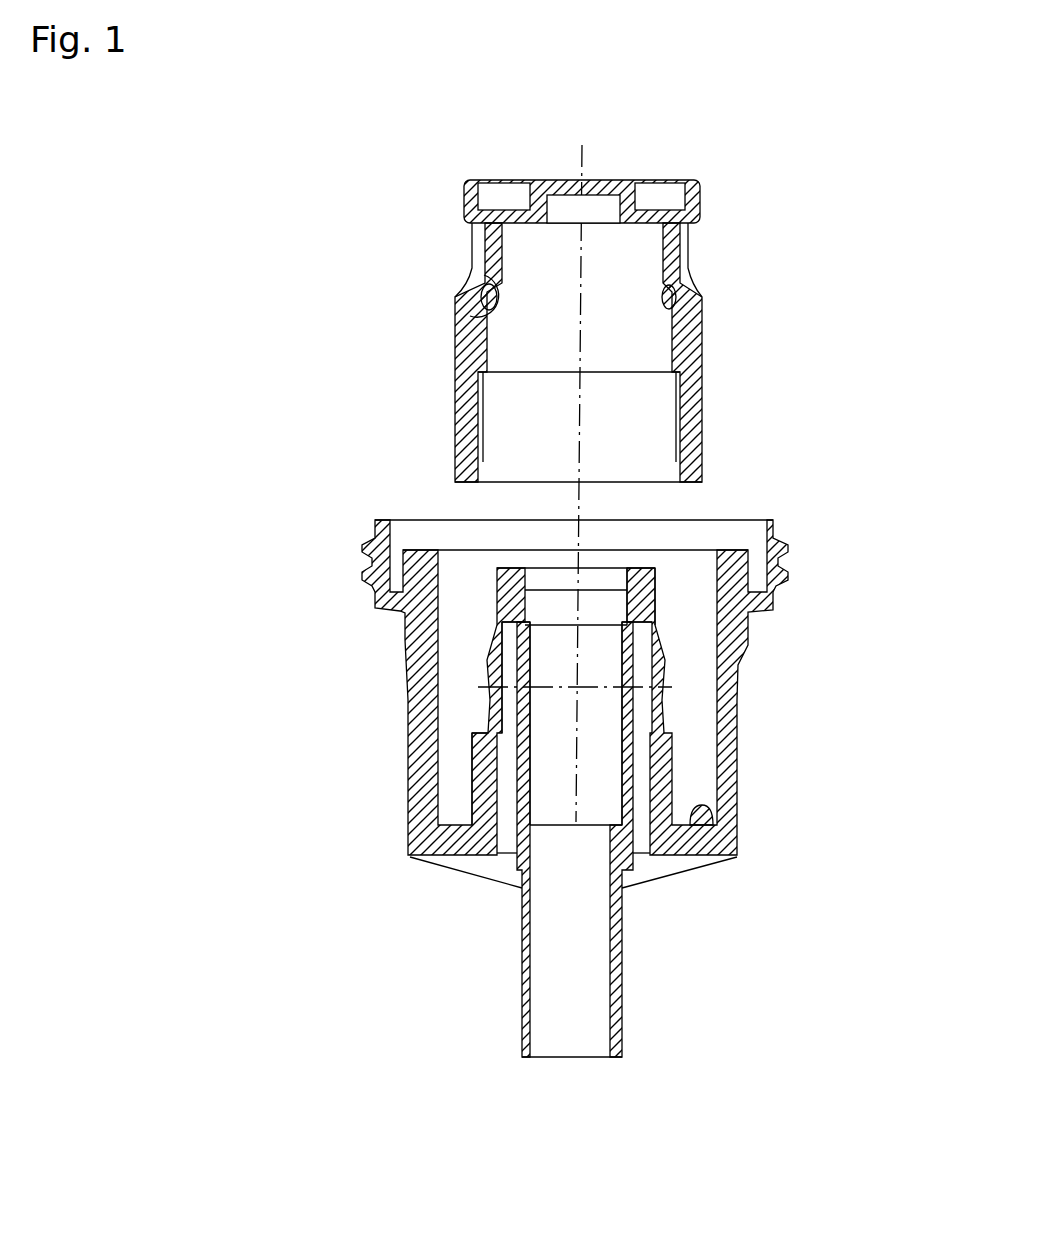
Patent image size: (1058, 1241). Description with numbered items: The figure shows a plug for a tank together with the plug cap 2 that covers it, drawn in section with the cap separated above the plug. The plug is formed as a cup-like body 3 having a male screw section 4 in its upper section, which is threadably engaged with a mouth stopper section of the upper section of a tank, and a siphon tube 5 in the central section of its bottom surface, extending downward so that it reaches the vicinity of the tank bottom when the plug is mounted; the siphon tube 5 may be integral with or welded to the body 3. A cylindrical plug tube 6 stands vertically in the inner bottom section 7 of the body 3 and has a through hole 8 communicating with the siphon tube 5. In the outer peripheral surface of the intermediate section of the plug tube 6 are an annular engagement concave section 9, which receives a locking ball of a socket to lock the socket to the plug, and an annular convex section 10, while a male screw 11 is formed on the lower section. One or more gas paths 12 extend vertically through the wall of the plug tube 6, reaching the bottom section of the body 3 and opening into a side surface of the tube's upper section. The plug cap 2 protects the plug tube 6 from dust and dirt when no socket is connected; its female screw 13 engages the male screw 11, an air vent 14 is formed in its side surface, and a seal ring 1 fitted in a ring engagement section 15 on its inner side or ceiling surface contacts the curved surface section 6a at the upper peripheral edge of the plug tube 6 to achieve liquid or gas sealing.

The seal ring 1 is at (703, 292).
The plug cap 2 is at (698, 178).
The body 3 is at (591, 693).
The male screw section 4 is at (790, 550).
The siphon tube 5 is at (622, 972).
The plug tube 6 is at (692, 718).
The curved surface section 6a is at (503, 572).
The inner bottom section 7 is at (705, 808).
The through hole 8 is at (603, 781).
The engagement concave section 9 is at (500, 688).
The annular convex section 10 is at (505, 672).
The male screw 11 is at (472, 772).
The gas path 12 is at (636, 657).
The female screw 13 is at (492, 408).
The air vent 14 is at (470, 322).
The ring engagement section 15 is at (480, 285).